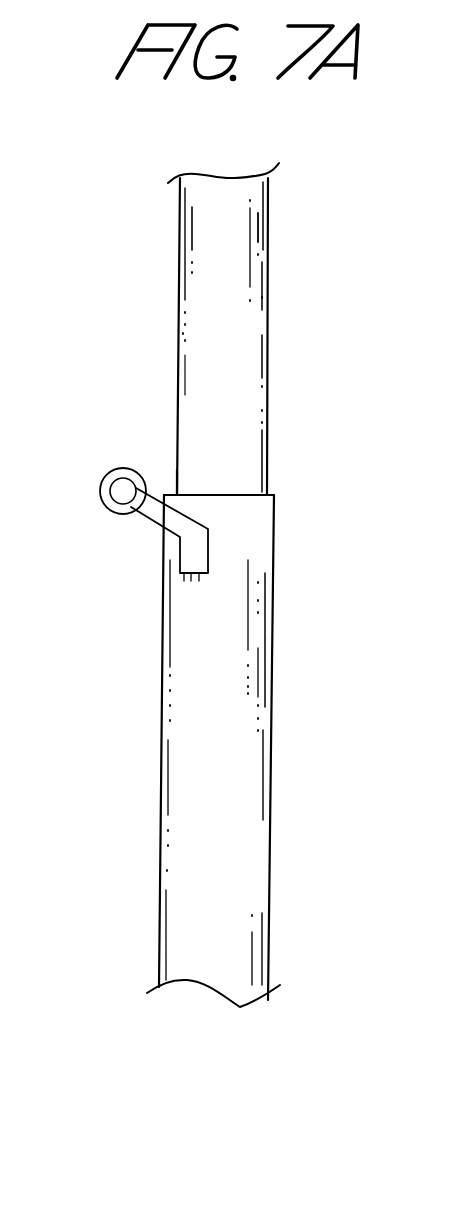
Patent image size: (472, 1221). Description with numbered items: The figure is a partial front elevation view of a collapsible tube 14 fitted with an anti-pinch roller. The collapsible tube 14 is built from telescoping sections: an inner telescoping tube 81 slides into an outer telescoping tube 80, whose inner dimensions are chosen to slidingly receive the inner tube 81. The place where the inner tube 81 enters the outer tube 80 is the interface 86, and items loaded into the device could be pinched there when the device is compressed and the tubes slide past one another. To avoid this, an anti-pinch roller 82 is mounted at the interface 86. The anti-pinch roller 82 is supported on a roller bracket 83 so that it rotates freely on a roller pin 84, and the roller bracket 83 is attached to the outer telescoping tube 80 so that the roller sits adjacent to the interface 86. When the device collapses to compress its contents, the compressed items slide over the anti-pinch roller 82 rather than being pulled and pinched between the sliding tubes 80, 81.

The collapsible tube 14 is at (345, 493).
The outer telescoping tube 80 is at (253, 765).
The inner telescoping tube 81 is at (189, 341).
The anti-pinch roller 82 is at (106, 483).
The roller bracket 83 is at (148, 513).
The roller pin 84 is at (126, 490).
The interface 86 is at (173, 492).